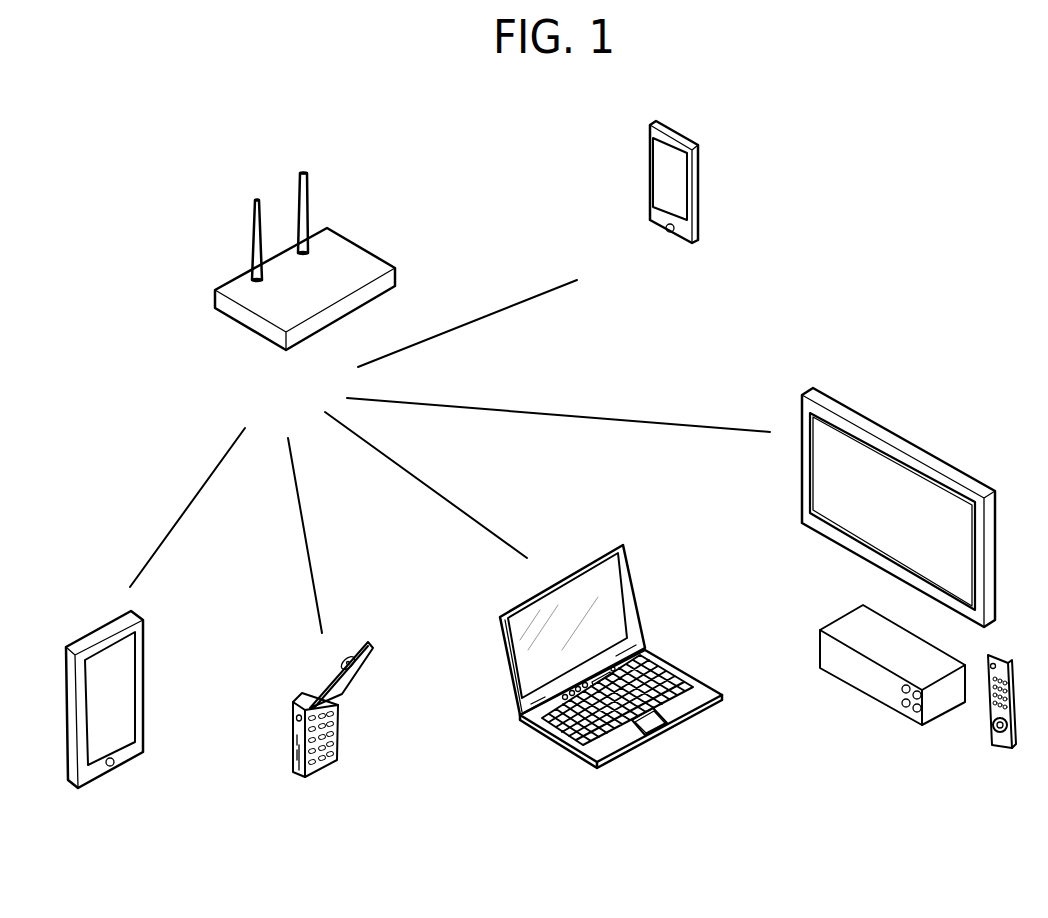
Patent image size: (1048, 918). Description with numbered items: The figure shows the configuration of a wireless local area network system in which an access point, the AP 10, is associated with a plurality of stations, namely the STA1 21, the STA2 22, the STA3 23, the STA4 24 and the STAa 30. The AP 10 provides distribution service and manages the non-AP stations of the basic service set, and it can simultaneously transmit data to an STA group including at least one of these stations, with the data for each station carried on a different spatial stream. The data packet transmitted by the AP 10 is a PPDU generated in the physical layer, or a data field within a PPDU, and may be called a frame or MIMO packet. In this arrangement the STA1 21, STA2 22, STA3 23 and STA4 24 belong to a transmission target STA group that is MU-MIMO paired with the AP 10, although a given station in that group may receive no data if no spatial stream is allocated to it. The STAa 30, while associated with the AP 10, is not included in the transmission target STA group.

The AP 10 is at (305, 300).
The STA1 21 is at (101, 737).
The STA2 22 is at (328, 752).
The STA3 23 is at (611, 694).
The STA4 24 is at (909, 594).
The STAa 30 is at (670, 221).